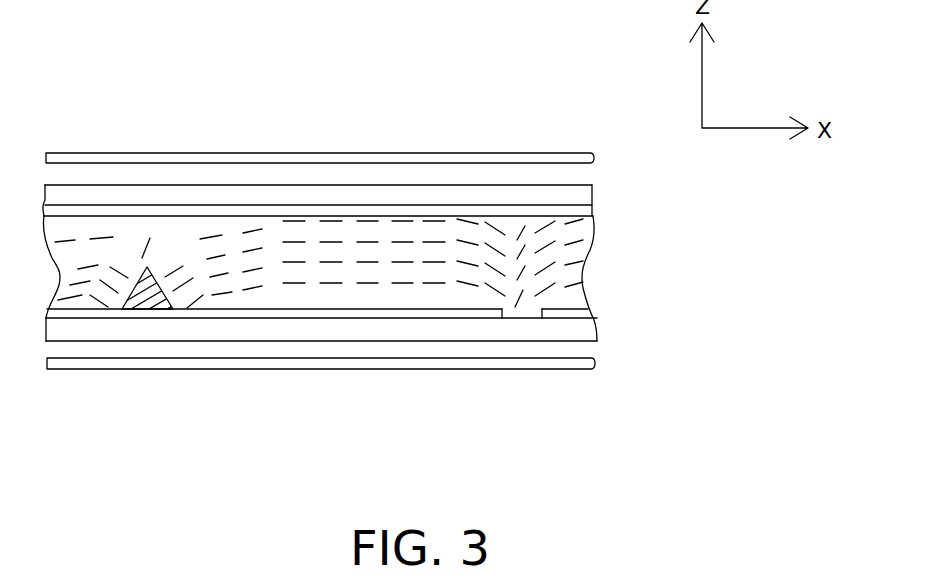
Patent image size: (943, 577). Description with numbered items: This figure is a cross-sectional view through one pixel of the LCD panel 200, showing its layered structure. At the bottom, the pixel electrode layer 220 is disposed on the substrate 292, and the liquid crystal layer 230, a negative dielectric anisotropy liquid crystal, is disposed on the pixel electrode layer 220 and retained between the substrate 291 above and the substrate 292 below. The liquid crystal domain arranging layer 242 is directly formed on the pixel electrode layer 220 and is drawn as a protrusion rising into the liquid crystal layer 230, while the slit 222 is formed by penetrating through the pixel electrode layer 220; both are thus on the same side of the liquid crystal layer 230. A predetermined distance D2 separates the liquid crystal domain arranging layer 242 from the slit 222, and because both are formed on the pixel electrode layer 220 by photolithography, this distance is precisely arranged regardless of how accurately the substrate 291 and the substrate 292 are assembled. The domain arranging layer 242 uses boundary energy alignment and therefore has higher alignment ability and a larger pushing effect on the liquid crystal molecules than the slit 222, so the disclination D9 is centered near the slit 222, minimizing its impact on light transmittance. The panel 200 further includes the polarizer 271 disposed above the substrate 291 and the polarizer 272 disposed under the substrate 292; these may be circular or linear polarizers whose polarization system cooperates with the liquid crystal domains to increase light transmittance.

The LCD panel 200 is at (84, 52).
The polarizer 271 is at (596, 156).
The substrate 291 is at (593, 194).
The liquid crystal layer 230 is at (593, 233).
The liquid crystal domain arranging layer 242 is at (140, 304).
The pixel electrode layer 220 is at (588, 309).
The slit 222 is at (522, 318).
The substrate 292 is at (595, 330).
The polarizer 272 is at (596, 361).
The disclination D9 is at (522, 228).
The predetermined distance D2 is at (173, 312).